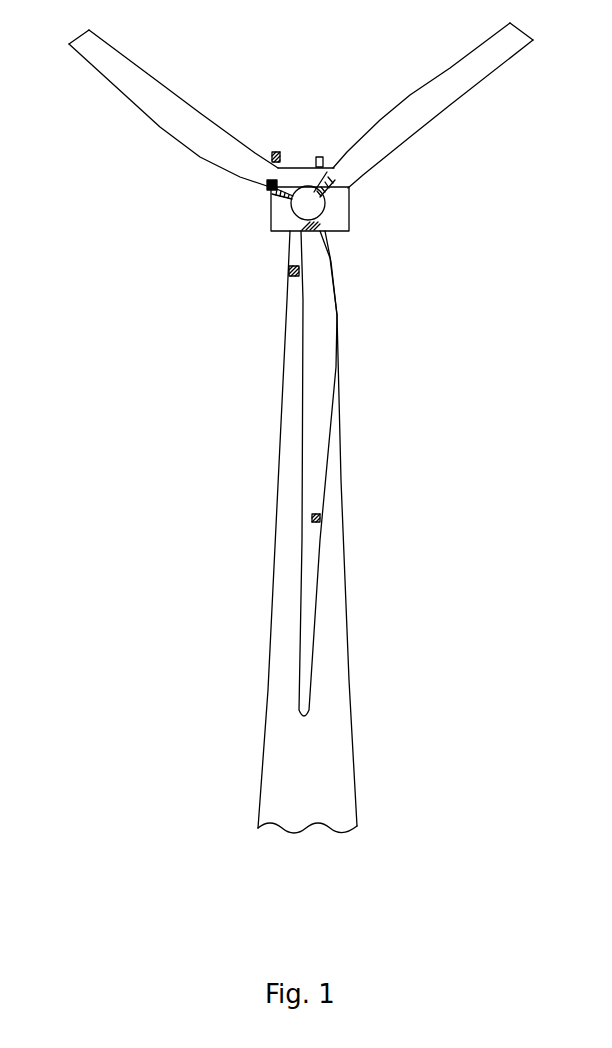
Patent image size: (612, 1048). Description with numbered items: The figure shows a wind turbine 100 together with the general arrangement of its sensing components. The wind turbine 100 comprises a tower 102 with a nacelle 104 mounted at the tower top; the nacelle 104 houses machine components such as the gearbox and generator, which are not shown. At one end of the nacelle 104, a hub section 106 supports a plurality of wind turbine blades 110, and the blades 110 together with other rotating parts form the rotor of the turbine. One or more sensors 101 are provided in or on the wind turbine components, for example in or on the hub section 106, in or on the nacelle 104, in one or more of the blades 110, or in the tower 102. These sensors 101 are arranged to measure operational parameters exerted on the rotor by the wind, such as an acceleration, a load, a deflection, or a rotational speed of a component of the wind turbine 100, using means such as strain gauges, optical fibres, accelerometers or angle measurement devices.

The wind turbine 100 is at (227, 570).
The sensors 101 is at (318, 157).
The tower 102 is at (330, 783).
The nacelle 104 is at (340, 218).
The hub section 106 is at (333, 195).
The wind turbine blades 110 is at (113, 64).